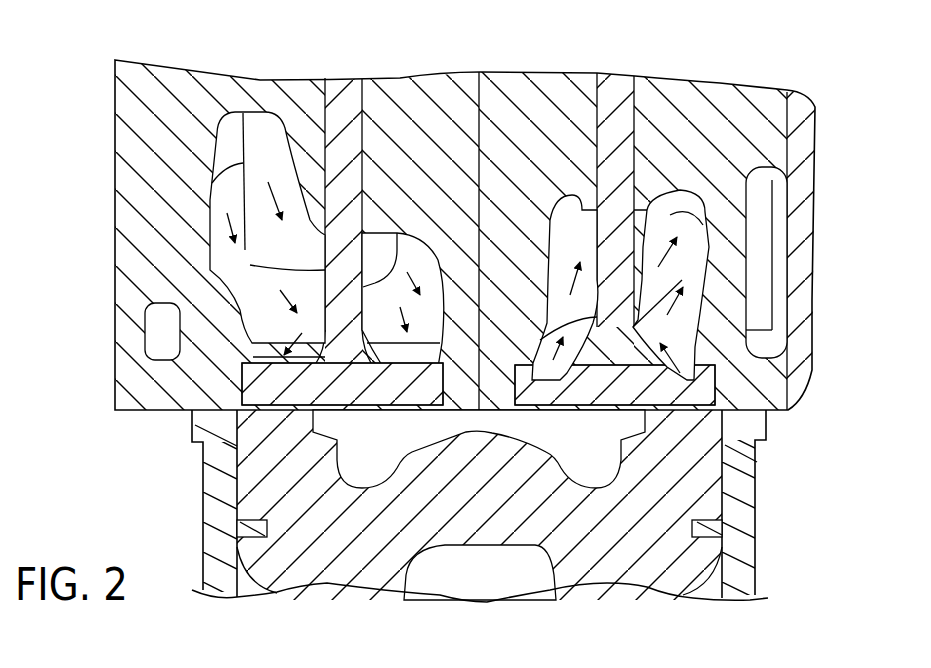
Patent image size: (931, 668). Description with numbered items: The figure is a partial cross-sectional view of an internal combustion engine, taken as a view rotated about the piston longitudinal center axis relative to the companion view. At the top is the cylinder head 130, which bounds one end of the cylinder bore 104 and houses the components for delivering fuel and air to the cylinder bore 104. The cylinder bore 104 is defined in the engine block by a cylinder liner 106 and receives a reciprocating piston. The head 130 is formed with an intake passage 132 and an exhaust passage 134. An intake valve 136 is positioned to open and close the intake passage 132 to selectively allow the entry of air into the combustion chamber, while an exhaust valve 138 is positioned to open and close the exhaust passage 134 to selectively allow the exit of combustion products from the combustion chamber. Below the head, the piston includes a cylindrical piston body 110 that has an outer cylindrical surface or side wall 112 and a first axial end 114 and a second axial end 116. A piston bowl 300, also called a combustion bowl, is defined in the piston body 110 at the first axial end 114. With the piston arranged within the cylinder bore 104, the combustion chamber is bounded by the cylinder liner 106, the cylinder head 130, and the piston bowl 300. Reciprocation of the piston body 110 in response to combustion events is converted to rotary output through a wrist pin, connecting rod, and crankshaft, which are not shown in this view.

The cylinder head 130 is at (496, 210).
The intake passage 132 is at (258, 147).
The exhaust passage 134 is at (683, 213).
The intake valve 136 is at (343, 117).
The exhaust valve 138 is at (615, 97).
The cylinder bore 104 is at (465, 533).
The cylinder liner 106 is at (733, 462).
The piston body 110 is at (648, 567).
The side wall 112 is at (237, 508).
The first axial end 114 is at (237, 442).
The second axial end 116 is at (328, 545).
The piston bowl 300 is at (376, 447).